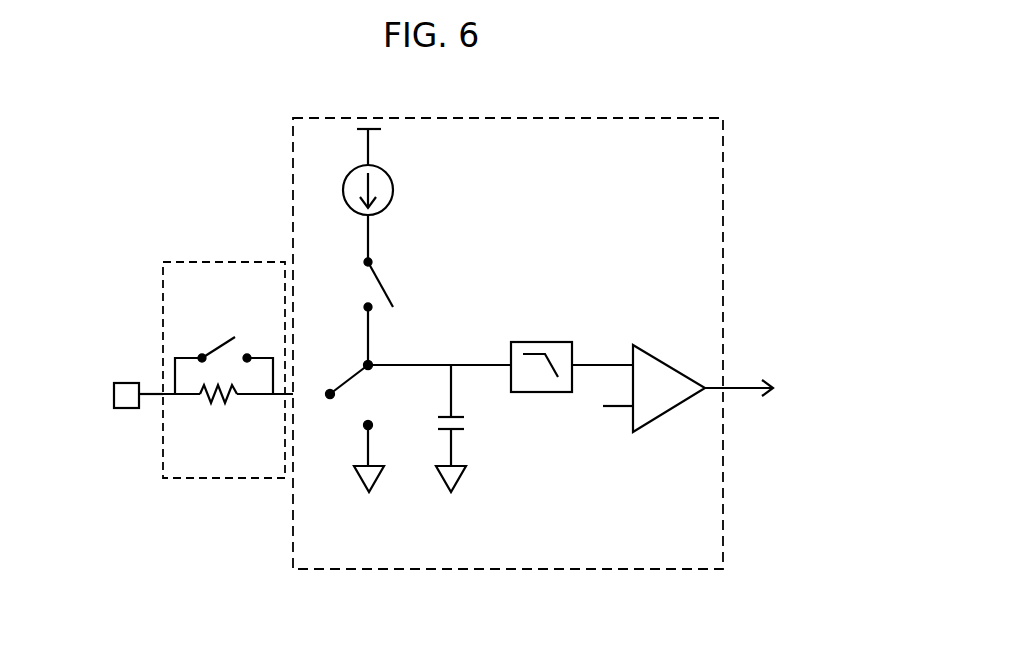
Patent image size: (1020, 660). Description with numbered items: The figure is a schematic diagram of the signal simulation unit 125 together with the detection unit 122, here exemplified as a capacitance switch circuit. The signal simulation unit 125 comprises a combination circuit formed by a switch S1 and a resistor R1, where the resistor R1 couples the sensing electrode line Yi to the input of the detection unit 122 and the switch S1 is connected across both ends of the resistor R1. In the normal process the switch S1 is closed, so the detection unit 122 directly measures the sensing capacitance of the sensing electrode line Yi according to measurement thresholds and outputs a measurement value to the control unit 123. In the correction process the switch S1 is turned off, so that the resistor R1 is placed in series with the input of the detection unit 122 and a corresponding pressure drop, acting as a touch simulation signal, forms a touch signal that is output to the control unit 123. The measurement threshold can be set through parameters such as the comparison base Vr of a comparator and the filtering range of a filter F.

The detection unit 122 is at (521, 380).
The control unit 123 is at (833, 403).
The signal simulation unit 125 is at (228, 397).
The switch S1 is at (229, 340).
The resistor R1 is at (215, 400).
The filter F is at (535, 342).
The sensing electrode line Yi is at (115, 402).
The comparison base Vr is at (600, 407).